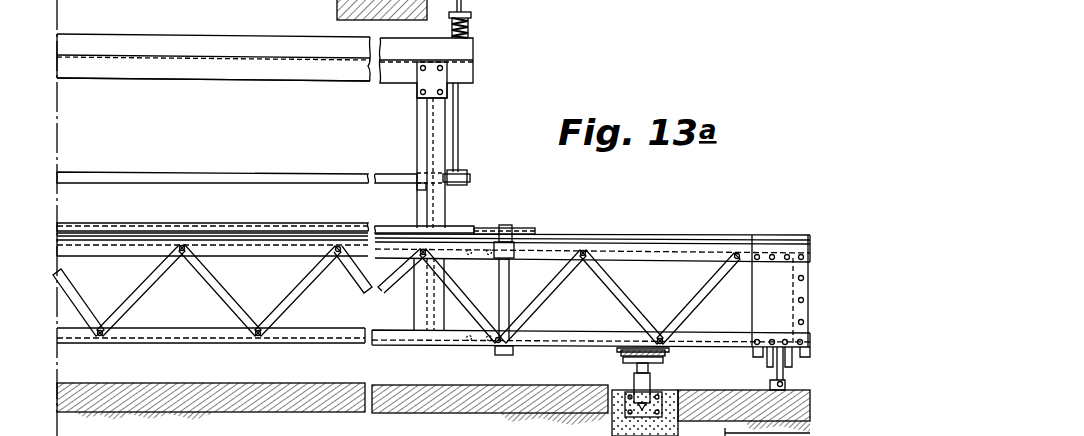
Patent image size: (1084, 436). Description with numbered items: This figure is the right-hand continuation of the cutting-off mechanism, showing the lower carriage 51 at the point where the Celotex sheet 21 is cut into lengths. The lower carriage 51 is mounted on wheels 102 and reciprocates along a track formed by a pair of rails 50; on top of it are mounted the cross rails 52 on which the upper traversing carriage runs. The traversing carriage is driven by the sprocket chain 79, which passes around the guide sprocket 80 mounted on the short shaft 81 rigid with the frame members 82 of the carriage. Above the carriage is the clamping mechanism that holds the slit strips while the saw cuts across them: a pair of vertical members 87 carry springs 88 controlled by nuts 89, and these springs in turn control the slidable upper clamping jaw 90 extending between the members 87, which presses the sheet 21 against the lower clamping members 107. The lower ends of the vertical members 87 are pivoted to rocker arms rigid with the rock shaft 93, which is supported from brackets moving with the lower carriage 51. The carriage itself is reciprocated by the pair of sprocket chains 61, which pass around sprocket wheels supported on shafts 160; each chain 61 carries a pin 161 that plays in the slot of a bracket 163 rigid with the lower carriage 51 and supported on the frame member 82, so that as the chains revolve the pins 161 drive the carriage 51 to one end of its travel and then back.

The slidable upper clamping jaw 90 is at (163, 41).
The Celotex sheet 21 is at (262, 61).
The lower clamping member 107 is at (180, 79).
The nut 89 is at (464, 16).
The spring 88 is at (465, 29).
The vertical member 87 is at (459, 110).
The rock shaft 93 is at (140, 175).
The sprocket chain 79 is at (243, 231).
The guide sprocket 80 is at (523, 230).
The cross rail 52 is at (715, 237).
The lower carriage 51 is at (666, 260).
The frame member 82 is at (474, 333).
The short shaft 81 is at (509, 289).
The pin 161 is at (620, 353).
The bracket 163 is at (667, 352).
The sprocket chain 61 is at (661, 361).
The shaft 160 is at (638, 373).
The wheel 102 is at (776, 371).
The rail 50 is at (783, 388).